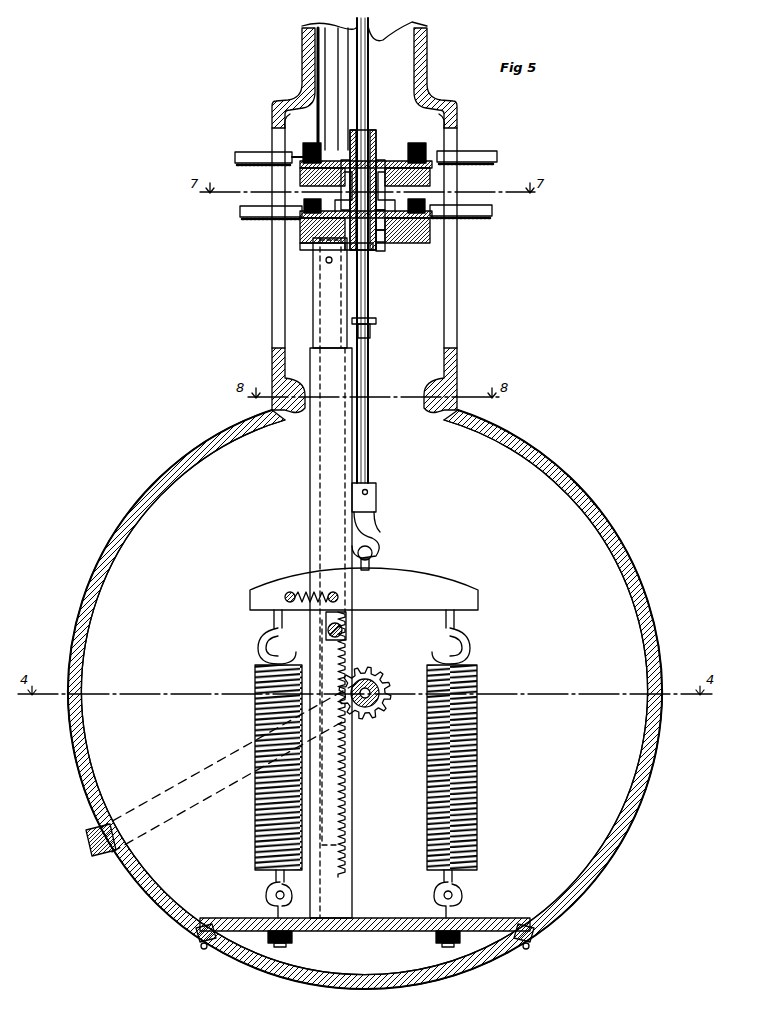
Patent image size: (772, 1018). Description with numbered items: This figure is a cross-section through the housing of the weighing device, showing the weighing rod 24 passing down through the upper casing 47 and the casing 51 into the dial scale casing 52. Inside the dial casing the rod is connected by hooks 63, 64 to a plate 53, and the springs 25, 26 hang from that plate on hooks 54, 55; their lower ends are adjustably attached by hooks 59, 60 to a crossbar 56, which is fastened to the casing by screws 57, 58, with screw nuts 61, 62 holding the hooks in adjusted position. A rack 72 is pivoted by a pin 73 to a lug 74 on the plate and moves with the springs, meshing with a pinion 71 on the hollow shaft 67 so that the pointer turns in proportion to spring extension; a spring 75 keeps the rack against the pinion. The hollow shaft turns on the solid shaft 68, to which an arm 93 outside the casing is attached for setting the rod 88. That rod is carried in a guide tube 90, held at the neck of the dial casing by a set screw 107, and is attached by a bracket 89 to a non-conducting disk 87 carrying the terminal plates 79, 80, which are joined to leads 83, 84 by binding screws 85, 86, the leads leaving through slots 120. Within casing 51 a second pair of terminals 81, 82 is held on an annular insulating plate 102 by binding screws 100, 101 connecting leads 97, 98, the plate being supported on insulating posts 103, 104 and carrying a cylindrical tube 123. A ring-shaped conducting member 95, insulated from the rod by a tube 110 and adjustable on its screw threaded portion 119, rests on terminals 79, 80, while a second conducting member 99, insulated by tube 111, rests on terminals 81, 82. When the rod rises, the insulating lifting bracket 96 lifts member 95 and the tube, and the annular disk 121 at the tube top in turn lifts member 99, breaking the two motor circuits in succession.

The weighing rod 24 is at (368, 24).
The spring 25 is at (255, 826).
The spring 26 is at (478, 790).
The upper casing 47 is at (427, 62).
The casing 51 is at (460, 109).
The dial scale casing 52 is at (612, 516).
The plate 53 is at (420, 585).
The hook 54 is at (262, 628).
The hook 55 is at (470, 628).
The crossbar 56 is at (385, 931).
The screw 57 is at (196, 938).
The screw 58 is at (534, 940).
The hook 59 is at (266, 892).
The hook 60 is at (464, 892).
The screw nut 61 is at (292, 940).
The screw nut 62 is at (436, 940).
The hook 63 is at (384, 530).
The hook 64 is at (374, 556).
The hollow shaft 67 is at (385, 684).
The solid shaft 68 is at (376, 683).
The pinion 71 is at (380, 710).
The rack 72 is at (345, 770).
The pivot pin 73 is at (343, 630).
The lug 74 is at (347, 638).
The spring 75 is at (305, 586).
The terminal plate 79 is at (300, 232).
The terminal plate 80 is at (432, 236).
The terminal plate 81 is at (300, 172).
The terminal plate 82 is at (432, 174).
The lead 83 is at (240, 212).
The lead 84 is at (492, 212).
The binding screw 85 is at (304, 204).
The binding screw 86 is at (426, 204).
The disk 87 is at (300, 246).
The rod 88 is at (313, 312).
The bracket 89 is at (313, 262).
The guide tube 90 is at (310, 462).
The arm 93 is at (196, 772).
The conducting member 95 is at (350, 252).
The lifting bracket 96 is at (372, 318).
The lead 97 is at (262, 152).
The lead 98 is at (490, 152).
The conducting member 99 is at (322, 148).
The binding screw 100 is at (300, 148).
The binding screw 101 is at (428, 150).
The insulating plate 102 is at (430, 184).
The insulating post 103 is at (340, 190).
The insulating post 104 is at (385, 225).
The set screw 107 is at (272, 403).
The insulating tube 110 is at (386, 252).
The insulating tube 111 is at (376, 128).
The screw threaded portion 119 is at (384, 240).
The slot 120 is at (272, 290).
The annular disk 121 is at (384, 160).
The cylindrical tube 123 is at (386, 170).